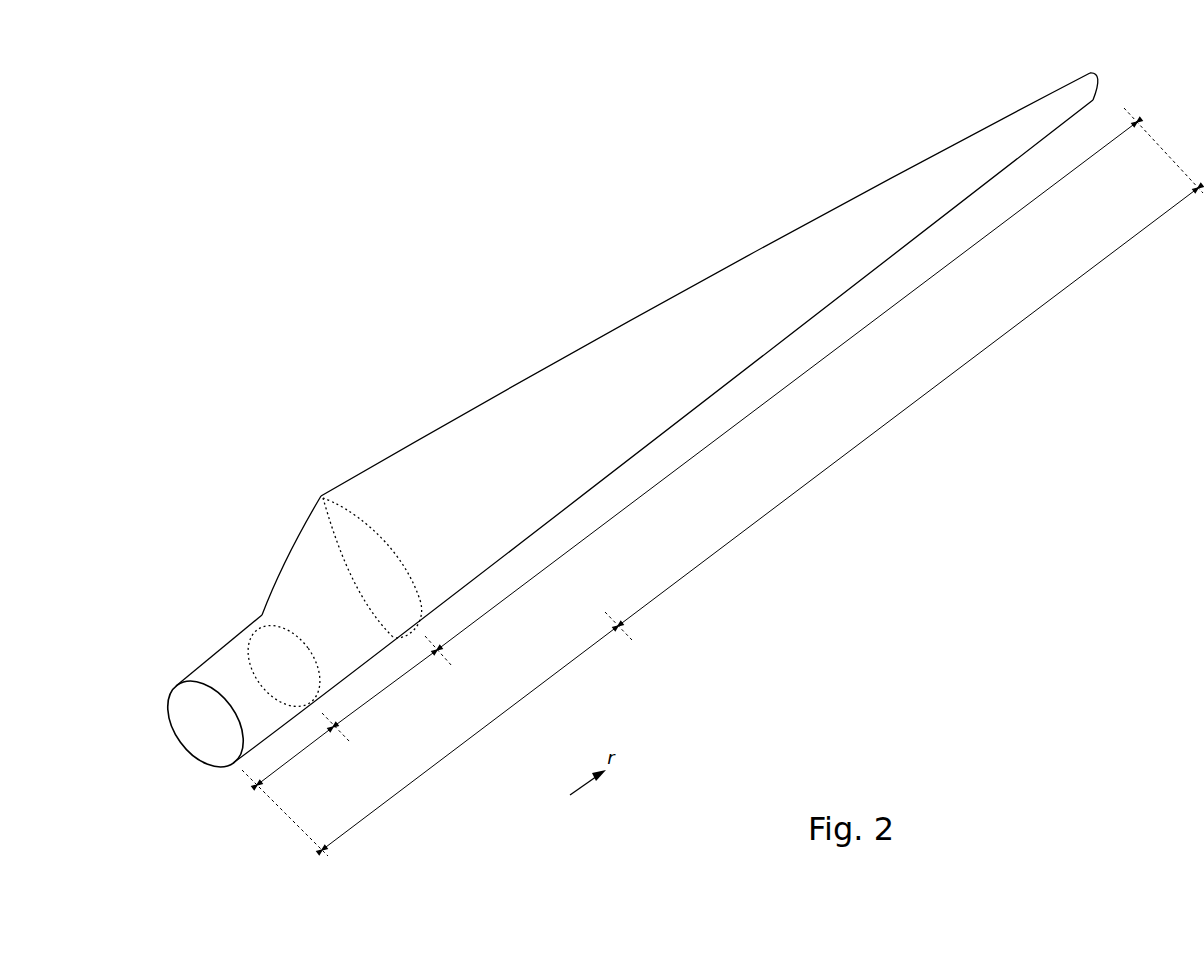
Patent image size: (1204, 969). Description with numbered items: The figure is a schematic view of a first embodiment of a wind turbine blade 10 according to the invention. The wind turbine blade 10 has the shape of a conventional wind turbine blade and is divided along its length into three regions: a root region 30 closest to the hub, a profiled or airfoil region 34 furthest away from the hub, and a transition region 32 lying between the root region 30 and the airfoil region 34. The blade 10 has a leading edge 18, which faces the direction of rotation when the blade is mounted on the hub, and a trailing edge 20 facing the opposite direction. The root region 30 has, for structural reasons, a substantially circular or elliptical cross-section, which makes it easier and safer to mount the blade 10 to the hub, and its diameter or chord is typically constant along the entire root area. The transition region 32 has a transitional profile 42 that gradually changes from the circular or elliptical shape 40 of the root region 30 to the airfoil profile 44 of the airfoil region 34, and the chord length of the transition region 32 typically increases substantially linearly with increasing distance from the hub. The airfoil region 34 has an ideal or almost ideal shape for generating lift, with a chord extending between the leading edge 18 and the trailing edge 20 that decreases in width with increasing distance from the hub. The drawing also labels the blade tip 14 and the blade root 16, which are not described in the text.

The wind turbine blade 10 is at (468, 286).
The blade tip 14 is at (1088, 75).
The blade root 16 is at (228, 668).
The leading edge 18 is at (820, 315).
The trailing edge 20 is at (825, 213).
The root region 30 is at (298, 755).
The transition region 32 is at (392, 685).
The airfoil region 34 is at (717, 437).
The circular or elliptical shape 40 is at (292, 640).
The transitional profile 42 is at (470, 737).
The airfoil profile 44 is at (750, 527).